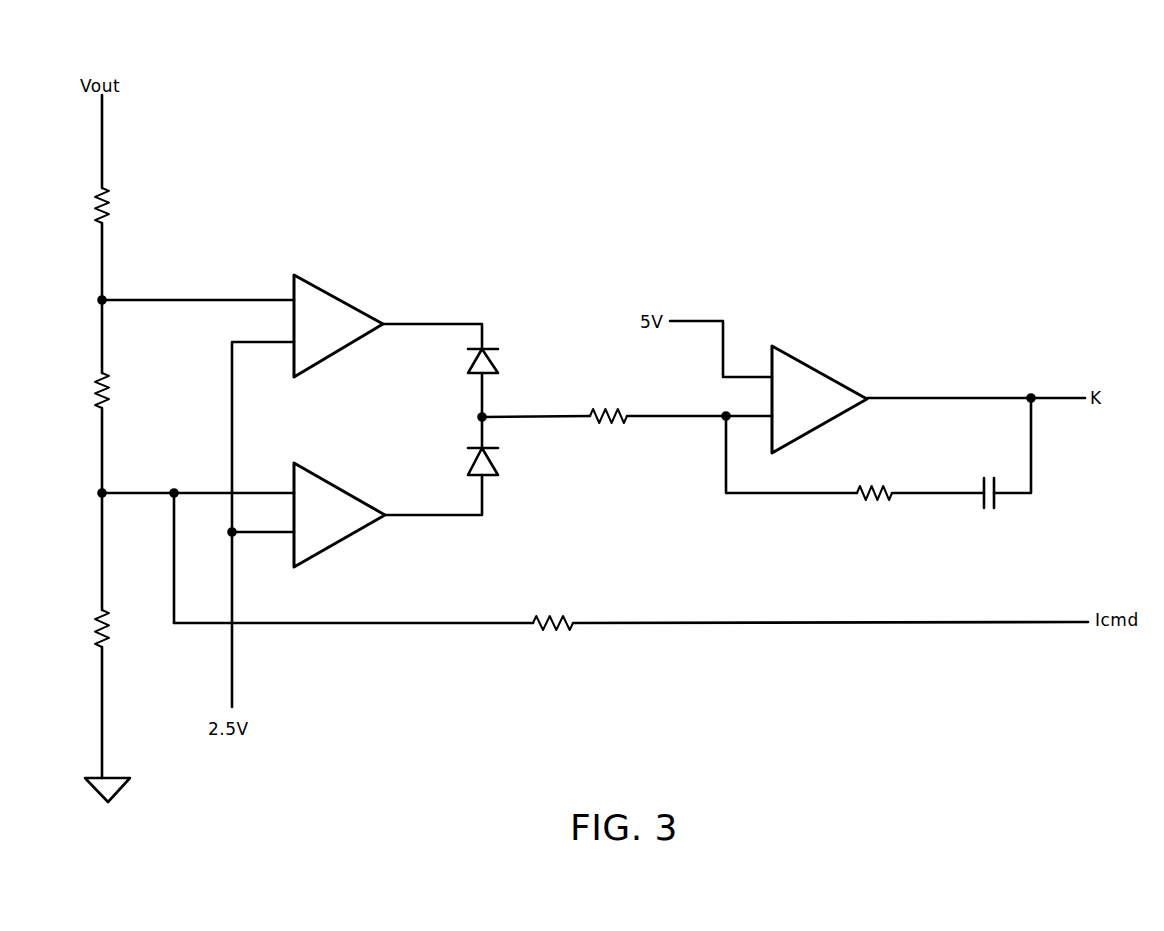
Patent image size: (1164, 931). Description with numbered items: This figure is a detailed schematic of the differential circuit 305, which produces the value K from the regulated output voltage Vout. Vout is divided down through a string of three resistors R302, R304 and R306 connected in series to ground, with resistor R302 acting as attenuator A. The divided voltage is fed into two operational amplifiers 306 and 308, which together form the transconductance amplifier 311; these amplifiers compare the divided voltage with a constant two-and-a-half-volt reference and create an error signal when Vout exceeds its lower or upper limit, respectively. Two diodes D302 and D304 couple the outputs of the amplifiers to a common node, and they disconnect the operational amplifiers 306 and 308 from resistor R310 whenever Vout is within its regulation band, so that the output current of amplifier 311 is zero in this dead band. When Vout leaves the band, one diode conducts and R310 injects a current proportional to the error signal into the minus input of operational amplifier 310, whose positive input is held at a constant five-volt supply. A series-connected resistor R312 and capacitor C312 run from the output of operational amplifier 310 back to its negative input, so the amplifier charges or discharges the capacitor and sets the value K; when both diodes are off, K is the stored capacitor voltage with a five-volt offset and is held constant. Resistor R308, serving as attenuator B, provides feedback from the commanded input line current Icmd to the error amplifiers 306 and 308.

The resistor R302 is at (106, 214).
The resistor R304 is at (108, 394).
The resistor R306 is at (109, 630).
The operational amplifier 306 is at (344, 300).
The operational amplifier 308 is at (353, 497).
The diode D302 is at (497, 364).
The diode D304 is at (497, 464).
The operational amplifier 310 is at (831, 378).
The resistor R310 is at (624, 421).
The resistor R312 is at (873, 498).
The capacitor C312 is at (996, 500).
The resistor R308 is at (550, 630).
The transconductance amplifier 311 is at (337, 626).
The differential circuit 305 is at (838, 683).